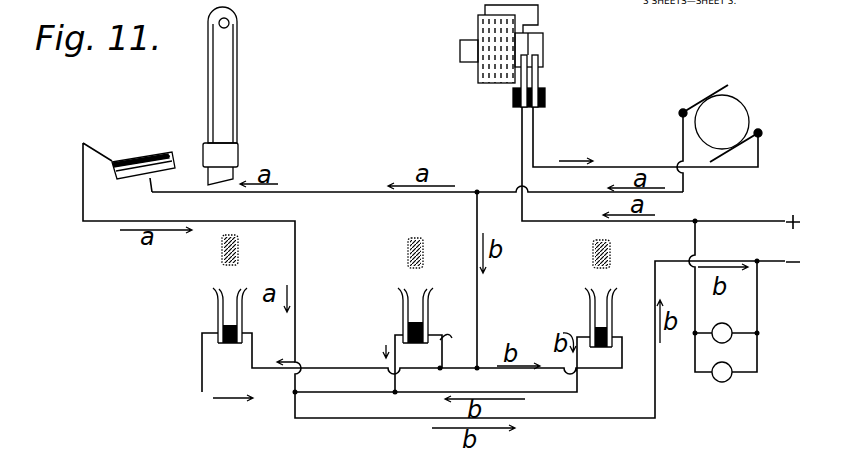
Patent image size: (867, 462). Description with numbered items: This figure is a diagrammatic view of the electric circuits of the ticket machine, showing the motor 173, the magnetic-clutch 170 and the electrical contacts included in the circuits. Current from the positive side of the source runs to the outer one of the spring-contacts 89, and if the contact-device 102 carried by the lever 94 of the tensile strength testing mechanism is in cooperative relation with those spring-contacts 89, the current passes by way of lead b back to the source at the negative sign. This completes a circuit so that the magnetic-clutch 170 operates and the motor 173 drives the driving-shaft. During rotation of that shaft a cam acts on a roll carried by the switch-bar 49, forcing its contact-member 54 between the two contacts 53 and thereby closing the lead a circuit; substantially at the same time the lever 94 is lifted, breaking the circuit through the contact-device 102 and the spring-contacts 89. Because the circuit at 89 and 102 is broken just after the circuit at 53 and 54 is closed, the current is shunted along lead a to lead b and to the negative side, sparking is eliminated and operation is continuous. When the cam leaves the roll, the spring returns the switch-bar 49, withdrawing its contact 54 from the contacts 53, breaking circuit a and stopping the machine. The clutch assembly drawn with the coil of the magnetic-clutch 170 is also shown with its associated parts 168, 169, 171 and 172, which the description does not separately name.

The switch-bar 49 is at (230, 117).
The contacts 53 is at (160, 158).
The contact-member 54 is at (238, 155).
The spring-contacts 89 is at (223, 304).
The lever 94 is at (238, 236).
The contact-device 102 is at (222, 258).
The relay base 168 is at (522, 73).
The relay frame 169 is at (523, 35).
The magnetic-clutch 170 is at (478, 77).
The relay armature housing 171 is at (533, 48).
The relay contact rods 172 is at (537, 82).
The motor 173 is at (720, 123).